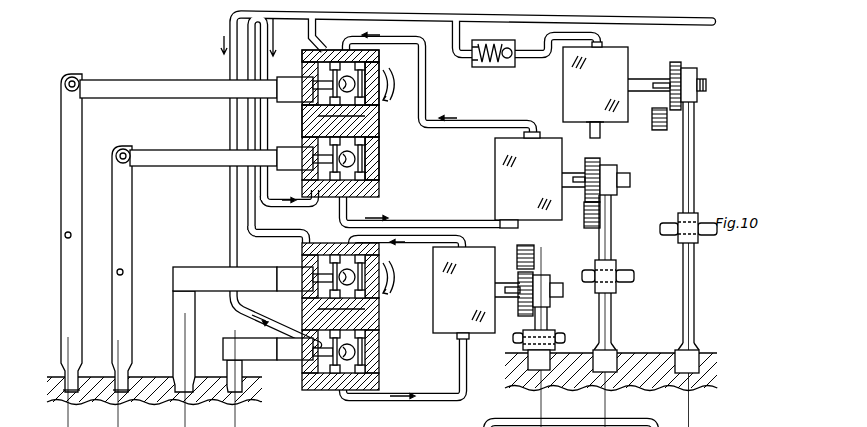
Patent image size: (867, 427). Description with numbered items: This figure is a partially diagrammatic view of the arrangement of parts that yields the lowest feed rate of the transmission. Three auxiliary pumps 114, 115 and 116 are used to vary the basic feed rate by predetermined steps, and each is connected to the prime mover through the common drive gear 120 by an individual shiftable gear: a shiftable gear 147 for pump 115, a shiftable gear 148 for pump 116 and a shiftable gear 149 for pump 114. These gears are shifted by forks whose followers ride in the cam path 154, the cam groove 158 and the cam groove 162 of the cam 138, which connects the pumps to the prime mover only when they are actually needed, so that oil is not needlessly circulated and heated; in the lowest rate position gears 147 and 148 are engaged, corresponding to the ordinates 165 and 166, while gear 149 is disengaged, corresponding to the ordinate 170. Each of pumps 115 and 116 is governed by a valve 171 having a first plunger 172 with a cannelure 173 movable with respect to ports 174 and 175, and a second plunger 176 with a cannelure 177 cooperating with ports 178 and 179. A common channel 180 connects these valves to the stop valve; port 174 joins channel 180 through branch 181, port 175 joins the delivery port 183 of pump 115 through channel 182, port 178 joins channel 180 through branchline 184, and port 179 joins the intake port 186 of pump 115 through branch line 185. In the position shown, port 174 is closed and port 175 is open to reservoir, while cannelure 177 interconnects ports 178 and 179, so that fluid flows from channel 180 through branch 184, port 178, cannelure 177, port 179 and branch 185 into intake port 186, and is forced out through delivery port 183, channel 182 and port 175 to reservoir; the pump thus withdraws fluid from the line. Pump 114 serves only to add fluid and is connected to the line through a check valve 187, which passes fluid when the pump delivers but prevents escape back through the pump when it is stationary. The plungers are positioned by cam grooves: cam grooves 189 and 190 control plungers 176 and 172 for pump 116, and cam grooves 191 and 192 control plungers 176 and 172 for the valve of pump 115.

The common channel 180 is at (393, 19).
The branch 181 is at (307, 27).
The port 174 is at (310, 58).
The port 175 is at (372, 63).
The first plunger 172 is at (284, 77).
The cannelure 173 is at (303, 125).
The port 178 is at (301, 148).
The valve 171 is at (380, 133).
The port 179 is at (380, 160).
The second plunger 176 is at (284, 170).
The branchline 184 is at (296, 208).
The cannelure 177 is at (336, 212).
The channel 182 is at (492, 120).
The check valve 187 is at (506, 68).
The auxiliary pump 114 is at (575, 90).
The auxiliary pump 115 is at (495, 164).
The delivery port 183 is at (541, 136).
The branch line 185 is at (459, 213).
The intake port 186 is at (519, 227).
The auxiliary pump 116 is at (433, 251).
The common drive gear 120 is at (659, 138).
The shiftable gear 147 is at (596, 160).
The shiftable gear 149 is at (680, 52).
The shiftable gear 148 is at (520, 315).
The cam groove 162 is at (528, 390).
The ordinate 165 is at (542, 408).
The cam path 154 is at (605, 385).
The ordinate 166 is at (606, 415).
The cam groove 158 is at (689, 385).
The ordinate 170 is at (690, 421).
The cam 138 is at (712, 358).
The cam groove 192 is at (62, 400).
The cam groove 191 is at (114, 400).
The cam groove 190 is at (176, 400).
The cam groove 189 is at (230, 400).